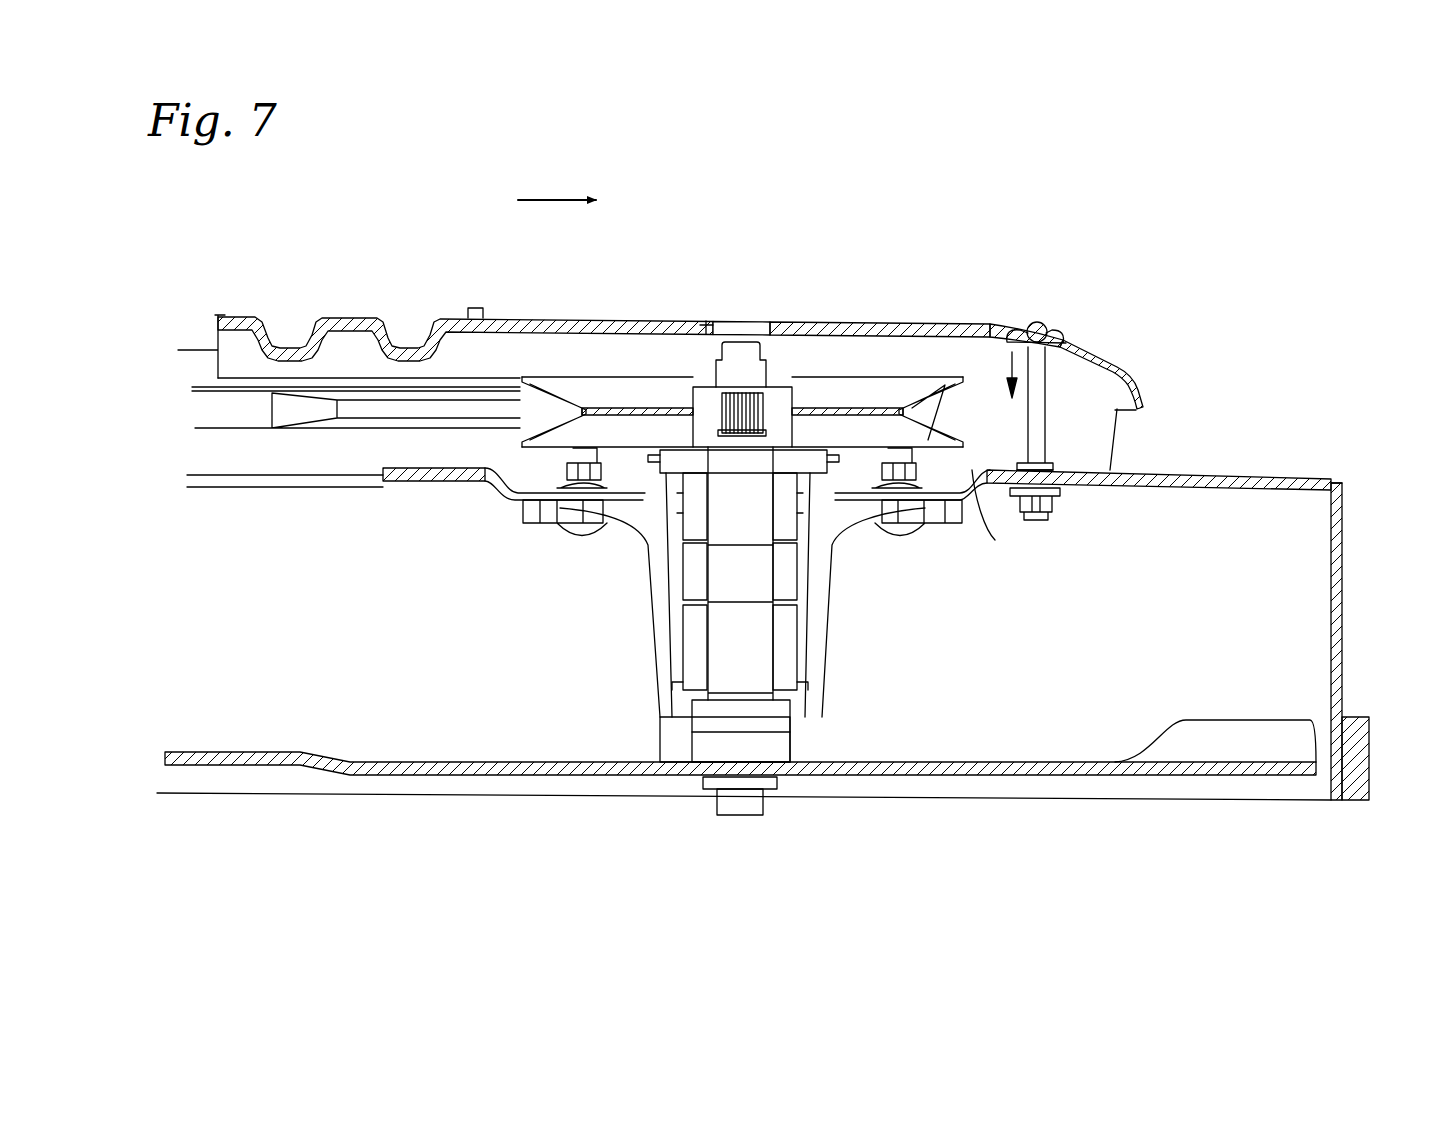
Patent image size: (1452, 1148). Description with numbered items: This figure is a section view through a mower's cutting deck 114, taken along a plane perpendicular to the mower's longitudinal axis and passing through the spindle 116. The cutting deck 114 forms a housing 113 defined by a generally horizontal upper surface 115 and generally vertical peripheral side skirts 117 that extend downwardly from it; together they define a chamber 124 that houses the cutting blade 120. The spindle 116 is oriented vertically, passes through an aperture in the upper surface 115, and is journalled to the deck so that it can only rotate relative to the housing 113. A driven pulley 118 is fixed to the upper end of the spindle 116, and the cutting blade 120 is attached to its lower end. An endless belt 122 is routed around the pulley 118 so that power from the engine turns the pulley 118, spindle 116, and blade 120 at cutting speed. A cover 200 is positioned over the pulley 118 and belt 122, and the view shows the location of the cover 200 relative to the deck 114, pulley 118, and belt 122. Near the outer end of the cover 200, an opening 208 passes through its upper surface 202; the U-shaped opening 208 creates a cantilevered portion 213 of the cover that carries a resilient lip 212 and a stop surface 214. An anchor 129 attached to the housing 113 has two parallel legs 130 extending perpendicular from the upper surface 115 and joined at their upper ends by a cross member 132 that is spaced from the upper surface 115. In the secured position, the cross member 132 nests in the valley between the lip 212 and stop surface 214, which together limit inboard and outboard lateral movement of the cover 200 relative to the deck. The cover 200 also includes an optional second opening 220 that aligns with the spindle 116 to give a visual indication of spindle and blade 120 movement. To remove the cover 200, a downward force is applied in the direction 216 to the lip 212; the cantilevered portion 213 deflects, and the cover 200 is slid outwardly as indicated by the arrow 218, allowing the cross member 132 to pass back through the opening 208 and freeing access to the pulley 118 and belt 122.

The cover 200 is at (598, 312).
The arrow 218 is at (540, 198).
The second hole or opening 220 is at (727, 327).
The upper surface 202 is at (822, 325).
The driven sheave or pulley 118 is at (957, 350).
The opening 208 is at (995, 540).
The resilient lip 212 is at (1022, 327).
The cross member 132 is at (1035, 322).
The cantilevered portion 213 is at (1048, 323).
The stop surface 214 is at (1060, 343).
The legs 130 is at (1050, 436).
The anchor 129 is at (1115, 410).
The direction 216 is at (995, 540).
The endless belt 122 is at (380, 425).
The spindle 116 is at (707, 570).
The upper surface 115 is at (1208, 480).
The cutting deck 114 is at (1341, 474).
The peripheral side skirts 117 is at (1345, 600).
The housing 113 is at (1335, 800).
The cutting blade 120 is at (1050, 777).
The chamber 124 is at (185, 717).